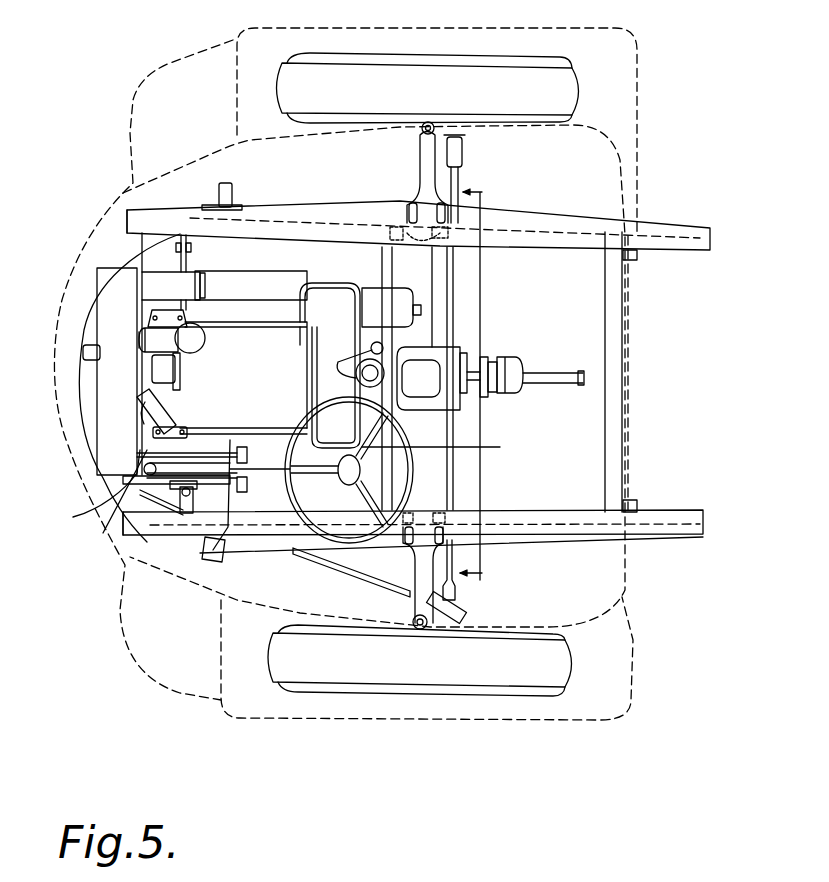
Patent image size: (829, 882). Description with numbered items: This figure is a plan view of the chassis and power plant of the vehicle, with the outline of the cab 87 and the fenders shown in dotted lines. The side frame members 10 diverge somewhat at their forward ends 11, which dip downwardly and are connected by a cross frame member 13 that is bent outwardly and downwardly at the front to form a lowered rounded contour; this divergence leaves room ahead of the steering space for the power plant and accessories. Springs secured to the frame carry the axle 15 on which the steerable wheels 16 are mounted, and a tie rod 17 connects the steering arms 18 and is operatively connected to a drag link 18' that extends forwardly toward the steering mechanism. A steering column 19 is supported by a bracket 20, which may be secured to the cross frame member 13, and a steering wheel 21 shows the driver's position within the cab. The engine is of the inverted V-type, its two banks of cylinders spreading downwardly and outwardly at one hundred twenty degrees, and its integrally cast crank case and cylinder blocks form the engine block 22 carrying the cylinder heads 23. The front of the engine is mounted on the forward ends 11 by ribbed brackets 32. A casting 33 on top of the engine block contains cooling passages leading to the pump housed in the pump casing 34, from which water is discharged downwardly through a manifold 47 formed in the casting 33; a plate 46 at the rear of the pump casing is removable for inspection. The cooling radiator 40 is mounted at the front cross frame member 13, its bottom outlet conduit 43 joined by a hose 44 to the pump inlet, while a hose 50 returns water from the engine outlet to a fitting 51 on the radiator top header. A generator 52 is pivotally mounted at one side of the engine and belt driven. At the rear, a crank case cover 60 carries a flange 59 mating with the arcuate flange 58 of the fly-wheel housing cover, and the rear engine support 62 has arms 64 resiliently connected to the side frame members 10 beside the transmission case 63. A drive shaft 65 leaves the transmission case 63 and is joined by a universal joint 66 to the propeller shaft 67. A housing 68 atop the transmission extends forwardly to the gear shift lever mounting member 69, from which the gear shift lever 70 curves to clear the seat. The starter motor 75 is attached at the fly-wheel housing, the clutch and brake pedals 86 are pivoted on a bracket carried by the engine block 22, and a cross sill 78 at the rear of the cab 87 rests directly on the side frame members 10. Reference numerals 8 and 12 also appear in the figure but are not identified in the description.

The direction arrow 8 is at (483, 192).
The side frame members 10 is at (683, 242).
The forward ends 11 is at (213, 191).
The steering link 12 is at (37, 362).
The cross frame member 13 is at (63, 397).
The axle 15 is at (430, 153).
The steerable wheels 16 is at (567, 87).
The tie rod 17 is at (457, 290).
The steering arms 18 is at (471, 375).
The drag link 18' is at (351, 572).
The steering column 19 is at (243, 300).
The bracket 20 is at (93, 488).
The steering wheel 21 is at (413, 472).
The engine block 22 is at (262, 268).
The cylinder heads 23 is at (293, 268).
The ribbed brackets 32 is at (188, 263).
The casting 33 is at (207, 340).
The pump casing 34 is at (233, 379).
The cooling radiator 40 is at (47, 453).
The outlet conduit 43 is at (120, 452).
The hose 44 is at (43, 430).
The plate 46 is at (233, 399).
The manifold 47 is at (230, 419).
The hose 50 is at (147, 330).
The fitting 51 is at (139, 337).
The generator 52 is at (148, 268).
The arcuate flange 58 is at (322, 391).
The flange 59 is at (310, 372).
The crank case cover 60 is at (277, 340).
The rear engine support 62 is at (383, 340).
The transmission case 63 is at (460, 348).
The arms 64 is at (520, 459).
The drive shaft 65 is at (480, 390).
The universal joint 66 is at (525, 360).
The propeller shaft 67 is at (563, 380).
The housing 68 is at (450, 390).
The gear shift lever mounting member 69 is at (383, 363).
The gear shift lever 70 is at (317, 352).
The starter motor 75 is at (373, 297).
The cross sill 78 is at (613, 375).
The clutch and brake pedals 86 is at (213, 550).
The cab 87 is at (242, 607).